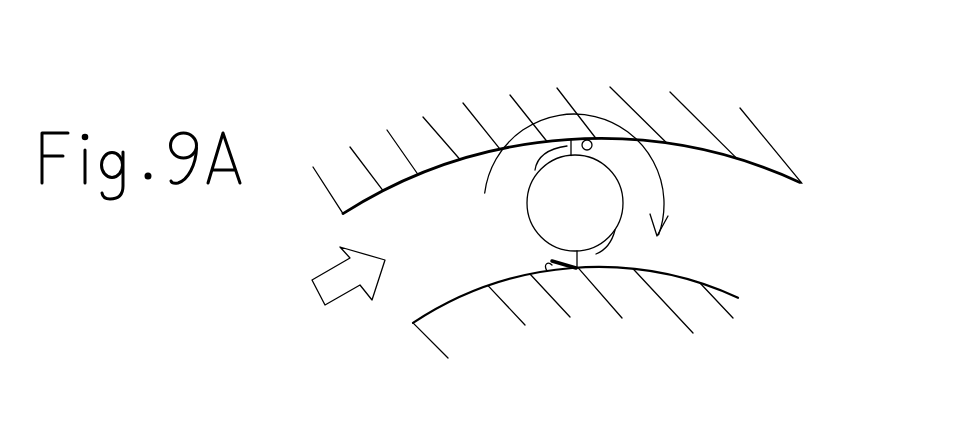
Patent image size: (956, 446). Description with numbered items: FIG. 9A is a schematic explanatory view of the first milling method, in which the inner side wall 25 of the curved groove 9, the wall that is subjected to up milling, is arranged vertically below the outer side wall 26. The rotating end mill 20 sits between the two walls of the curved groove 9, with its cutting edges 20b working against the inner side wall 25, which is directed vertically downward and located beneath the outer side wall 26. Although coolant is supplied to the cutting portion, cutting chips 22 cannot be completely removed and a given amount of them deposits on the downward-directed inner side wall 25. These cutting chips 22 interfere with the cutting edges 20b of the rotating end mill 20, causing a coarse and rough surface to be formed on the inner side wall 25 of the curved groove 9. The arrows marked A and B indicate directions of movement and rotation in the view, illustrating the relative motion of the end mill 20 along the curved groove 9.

The curved groove 9 is at (738, 188).
The end mill 20 is at (602, 195).
The cutting edges 20b is at (600, 253).
The cutting chips 22 is at (552, 261).
The inner side wall 25 is at (543, 267).
The outer side wall 26 is at (587, 140).
The movement direction A is at (338, 289).
The rotation direction B is at (520, 131).